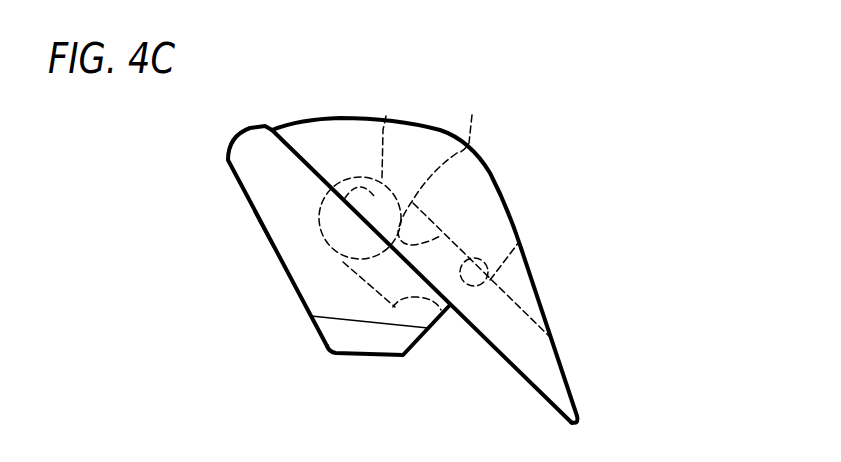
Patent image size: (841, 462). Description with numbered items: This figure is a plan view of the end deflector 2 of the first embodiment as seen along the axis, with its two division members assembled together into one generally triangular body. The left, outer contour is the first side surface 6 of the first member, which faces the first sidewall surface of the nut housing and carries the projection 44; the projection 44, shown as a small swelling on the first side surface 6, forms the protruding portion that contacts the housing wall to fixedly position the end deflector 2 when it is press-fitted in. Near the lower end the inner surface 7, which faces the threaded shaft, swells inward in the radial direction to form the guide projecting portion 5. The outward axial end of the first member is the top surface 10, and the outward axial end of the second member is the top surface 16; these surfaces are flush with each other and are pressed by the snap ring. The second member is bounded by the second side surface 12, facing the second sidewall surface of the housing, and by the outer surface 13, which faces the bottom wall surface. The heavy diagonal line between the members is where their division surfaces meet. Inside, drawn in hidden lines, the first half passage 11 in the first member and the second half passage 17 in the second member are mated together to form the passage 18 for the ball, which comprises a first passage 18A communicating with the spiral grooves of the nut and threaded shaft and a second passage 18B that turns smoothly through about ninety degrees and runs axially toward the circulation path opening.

The end deflector 2 is at (283, 294).
The guide projecting portion 5 is at (350, 352).
The first side surface 6 is at (240, 183).
The inner surface 7 is at (379, 317).
The top surface 10 is at (250, 147).
The first half passage 11 is at (441, 308).
The second side surface 12 is at (533, 288).
The outer surface 13 is at (340, 120).
The top surface 16 is at (477, 215).
The second half passage 17 is at (523, 236).
The passage 18 is at (492, 72).
The first passage 18A is at (472, 115).
The second passage 18B is at (386, 116).
The projection 44 is at (258, 232).